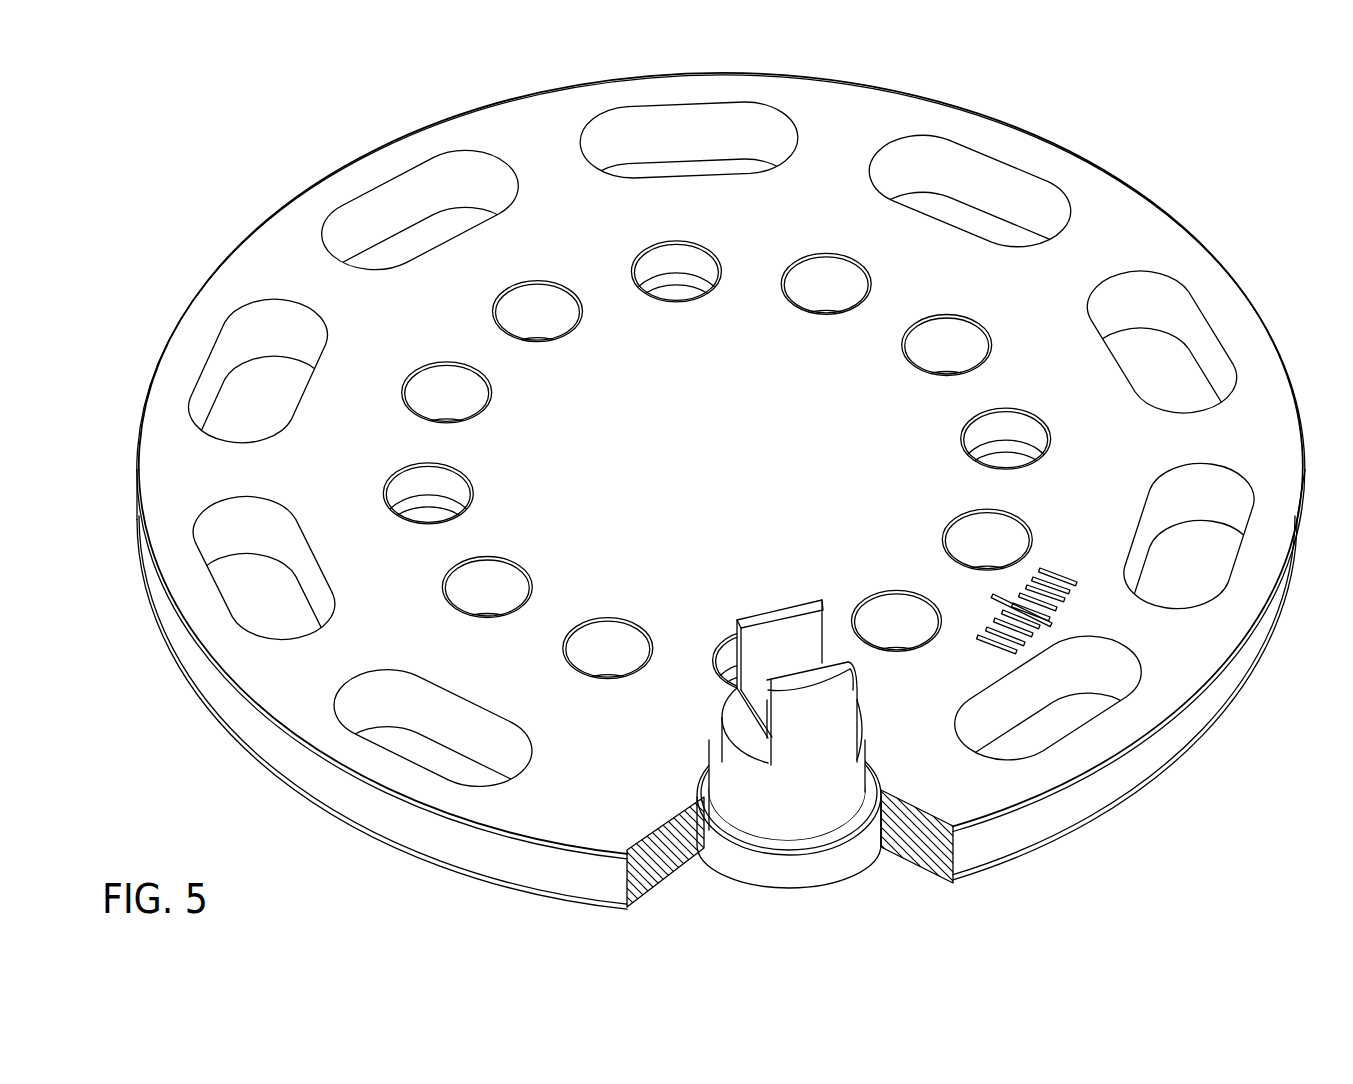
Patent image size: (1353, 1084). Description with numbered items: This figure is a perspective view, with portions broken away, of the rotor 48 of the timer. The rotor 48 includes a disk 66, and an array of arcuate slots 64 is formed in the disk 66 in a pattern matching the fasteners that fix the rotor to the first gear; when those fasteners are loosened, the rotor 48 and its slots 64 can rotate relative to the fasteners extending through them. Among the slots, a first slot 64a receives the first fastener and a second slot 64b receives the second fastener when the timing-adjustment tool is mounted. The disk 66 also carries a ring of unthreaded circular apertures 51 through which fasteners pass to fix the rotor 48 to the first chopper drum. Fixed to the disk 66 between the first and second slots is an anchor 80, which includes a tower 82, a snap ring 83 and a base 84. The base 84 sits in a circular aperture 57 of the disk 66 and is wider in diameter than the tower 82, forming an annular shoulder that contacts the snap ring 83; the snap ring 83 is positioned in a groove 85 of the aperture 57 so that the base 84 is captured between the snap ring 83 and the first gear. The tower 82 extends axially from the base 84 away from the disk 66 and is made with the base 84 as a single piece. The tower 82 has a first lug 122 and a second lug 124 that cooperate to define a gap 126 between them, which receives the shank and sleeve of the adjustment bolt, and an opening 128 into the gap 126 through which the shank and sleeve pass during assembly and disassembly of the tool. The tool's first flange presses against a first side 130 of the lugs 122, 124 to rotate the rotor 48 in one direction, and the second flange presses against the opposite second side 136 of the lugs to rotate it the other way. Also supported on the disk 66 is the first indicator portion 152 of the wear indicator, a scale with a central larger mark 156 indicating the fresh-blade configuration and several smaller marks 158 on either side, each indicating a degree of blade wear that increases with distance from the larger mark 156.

The rotor 48 is at (300, 98).
The disk 66 is at (1120, 222).
The slots 64 is at (990, 170).
The first slot 64a is at (1030, 692).
The second slot 64b is at (470, 730).
The apertures 51 is at (545, 298).
The anchor 80 is at (705, 598).
The first lug 122 is at (760, 615).
The opening 128 is at (790, 632).
The second side 136 is at (828, 632).
The gap 126 is at (766, 645).
The second lug 124 is at (822, 712).
The tower 82 is at (830, 762).
The first side 130 is at (786, 727).
The snap ring 83 is at (772, 842).
The base 84 is at (811, 866).
The groove 85 is at (873, 806).
The aperture 57 is at (722, 832).
The first indicator portion 152 is at (975, 595).
The larger mark 156 is at (997, 597).
The smaller marks 158 is at (1007, 588).